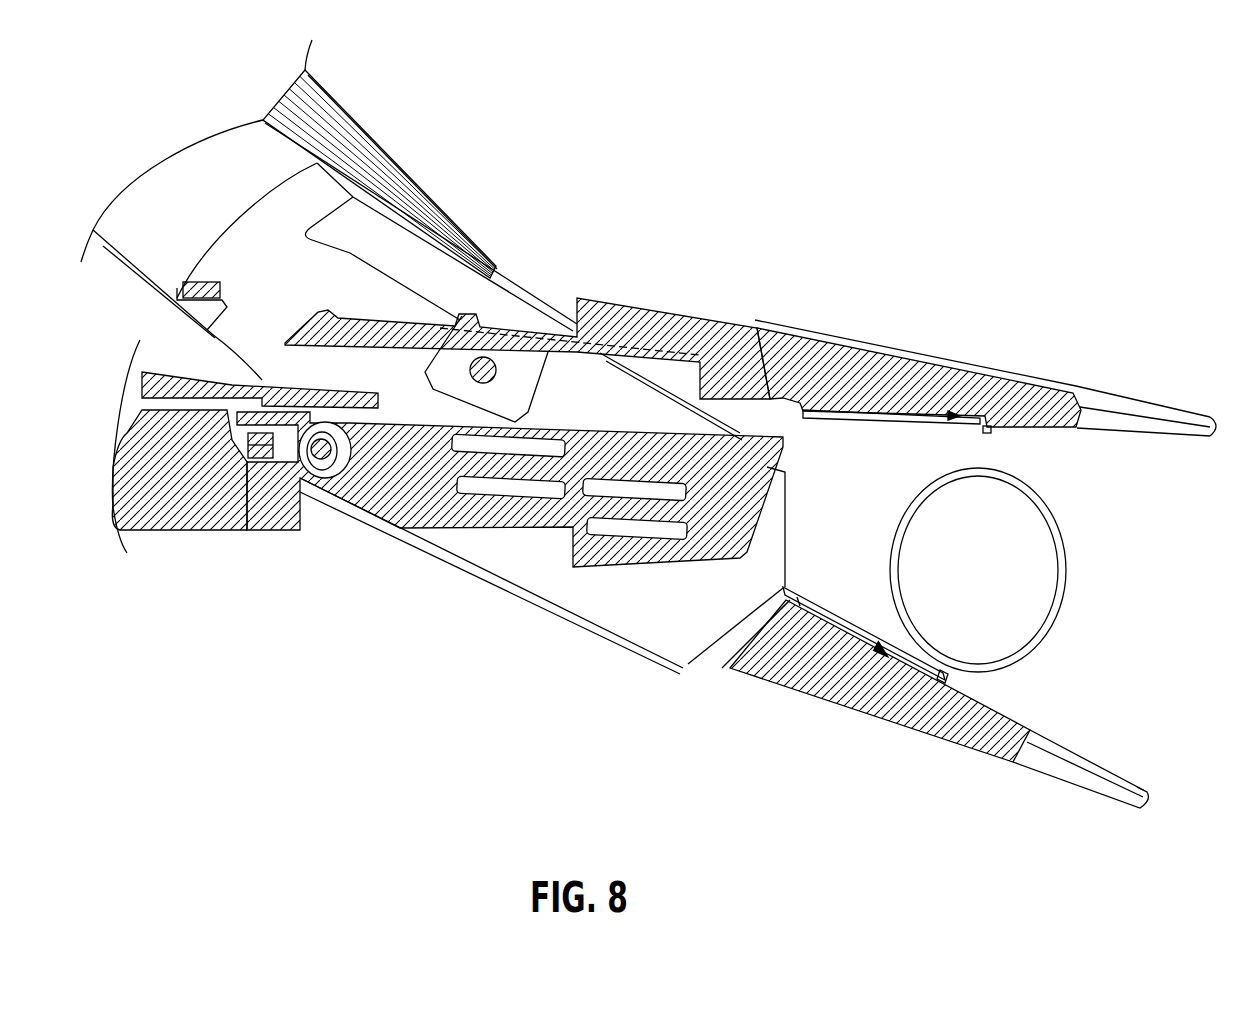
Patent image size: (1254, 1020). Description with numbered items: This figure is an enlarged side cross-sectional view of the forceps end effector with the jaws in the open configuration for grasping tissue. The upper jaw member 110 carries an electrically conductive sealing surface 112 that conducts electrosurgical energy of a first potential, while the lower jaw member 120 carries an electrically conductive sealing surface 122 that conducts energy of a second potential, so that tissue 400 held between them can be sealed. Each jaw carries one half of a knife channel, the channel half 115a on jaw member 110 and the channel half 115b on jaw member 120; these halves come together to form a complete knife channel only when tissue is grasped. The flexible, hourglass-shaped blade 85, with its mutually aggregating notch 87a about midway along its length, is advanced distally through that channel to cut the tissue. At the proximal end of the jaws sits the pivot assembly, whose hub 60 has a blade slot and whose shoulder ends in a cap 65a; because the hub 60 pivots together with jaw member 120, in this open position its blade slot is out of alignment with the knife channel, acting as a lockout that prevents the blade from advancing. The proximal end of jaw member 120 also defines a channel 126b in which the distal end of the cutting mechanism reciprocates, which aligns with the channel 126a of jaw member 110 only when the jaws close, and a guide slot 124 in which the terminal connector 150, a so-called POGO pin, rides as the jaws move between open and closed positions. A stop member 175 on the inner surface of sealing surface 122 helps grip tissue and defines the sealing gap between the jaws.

The hub 60 is at (496, 397).
The cap 65a is at (517, 425).
The blade 85 is at (342, 318).
The mutually aggregating notch 87a is at (200, 336).
The jaw member 110 is at (1088, 362).
The electrically conductive sealing surface 112 is at (1153, 440).
The channel half 115a is at (928, 414).
The channel half 115b is at (858, 632).
The jaw member 120 is at (901, 768).
The electrically conductive sealing surface 122 is at (1068, 745).
The guide slot 124 is at (353, 425).
The channel 126a is at (682, 368).
The channel 126b is at (560, 408).
The terminal connector 150 is at (303, 466).
The stop member 175 is at (987, 433).
The tissue 400 is at (1040, 577).